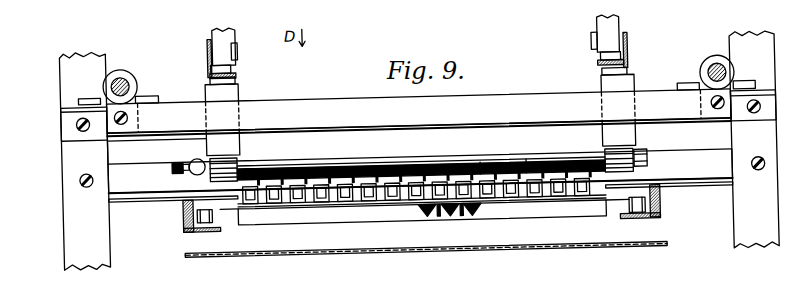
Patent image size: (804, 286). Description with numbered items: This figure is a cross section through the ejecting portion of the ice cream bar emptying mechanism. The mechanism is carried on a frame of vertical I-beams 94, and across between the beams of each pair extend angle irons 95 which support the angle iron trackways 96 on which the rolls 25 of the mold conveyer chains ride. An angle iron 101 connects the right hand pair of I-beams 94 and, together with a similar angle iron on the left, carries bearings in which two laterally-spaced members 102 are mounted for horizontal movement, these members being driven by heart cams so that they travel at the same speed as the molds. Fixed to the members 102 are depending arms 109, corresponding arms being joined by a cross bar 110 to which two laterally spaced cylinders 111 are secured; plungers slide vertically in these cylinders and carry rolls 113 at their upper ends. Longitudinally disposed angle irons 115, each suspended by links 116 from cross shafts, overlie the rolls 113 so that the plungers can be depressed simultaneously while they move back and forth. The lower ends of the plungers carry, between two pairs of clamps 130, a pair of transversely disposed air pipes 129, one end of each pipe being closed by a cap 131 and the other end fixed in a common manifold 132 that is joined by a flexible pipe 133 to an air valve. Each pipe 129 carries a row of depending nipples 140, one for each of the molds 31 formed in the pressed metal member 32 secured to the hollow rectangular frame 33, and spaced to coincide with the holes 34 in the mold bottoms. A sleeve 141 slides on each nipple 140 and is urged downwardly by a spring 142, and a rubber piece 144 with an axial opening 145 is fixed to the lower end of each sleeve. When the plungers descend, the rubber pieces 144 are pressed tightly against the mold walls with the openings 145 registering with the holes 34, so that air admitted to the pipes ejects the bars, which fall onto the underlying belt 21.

The belt 21 is at (587, 257).
The rolls 25 is at (208, 221).
The molds 31 is at (455, 216).
The pressed metal member 32 is at (492, 209).
The hollow rectangular frame 33 is at (575, 210).
The holes 34 is at (428, 218).
The vertical I-beams 94 is at (771, 31).
The angle irons 95 is at (127, 193).
The angle iron trackways 96 is at (184, 226).
The angle iron 101 is at (68, 118).
The members 102 is at (127, 72).
The depending arms 109 is at (140, 86).
The cross bar 110 is at (419, 112).
The cylinders 111 is at (242, 86).
The rolls 113 is at (223, 83).
The angle irons 115 is at (212, 45).
The links 116 is at (240, 32).
The pipes 129 is at (480, 164).
The clamps 130 is at (240, 156).
The cap 131 is at (647, 164).
The manifold 132 is at (196, 153).
The flexible pipe 133 is at (172, 166).
The nipples 140 is at (365, 167).
The sleeve 141 is at (222, 175).
The spring 142 is at (526, 165).
The rubber piece 144 is at (355, 184).
The axial opening 145 is at (340, 196).